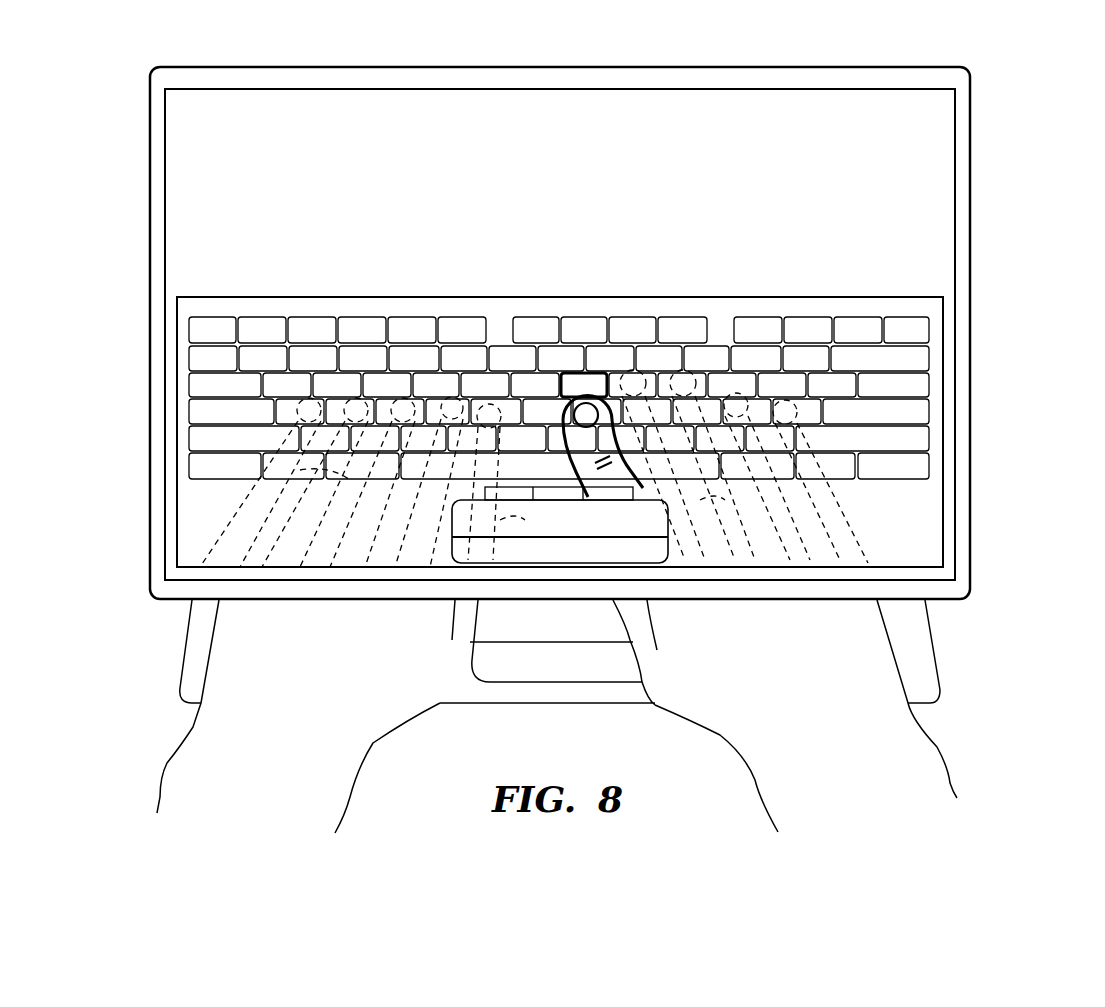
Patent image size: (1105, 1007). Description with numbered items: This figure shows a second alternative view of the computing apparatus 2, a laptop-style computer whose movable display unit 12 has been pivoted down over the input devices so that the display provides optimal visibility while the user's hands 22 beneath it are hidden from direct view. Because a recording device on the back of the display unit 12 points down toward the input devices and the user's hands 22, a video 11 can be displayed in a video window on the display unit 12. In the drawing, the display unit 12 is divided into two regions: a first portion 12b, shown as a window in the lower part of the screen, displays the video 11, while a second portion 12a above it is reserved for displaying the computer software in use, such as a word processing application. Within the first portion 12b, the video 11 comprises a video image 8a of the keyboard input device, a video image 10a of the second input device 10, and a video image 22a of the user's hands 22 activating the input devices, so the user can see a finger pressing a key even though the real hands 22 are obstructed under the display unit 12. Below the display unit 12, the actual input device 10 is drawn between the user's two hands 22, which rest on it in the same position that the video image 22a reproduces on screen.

The computing apparatus 2 is at (1026, 152).
The video 11 is at (983, 369).
The display unit 12 is at (965, 262).
The second portion of display unit 12a is at (178, 224).
The first portion of display unit 12b is at (177, 356).
The video image of input device 8a is at (923, 436).
The input device 10 is at (557, 668).
The video image of input device 10a is at (552, 531).
The user's hands 22 is at (302, 716).
The video image of user's hands 22a is at (316, 526).